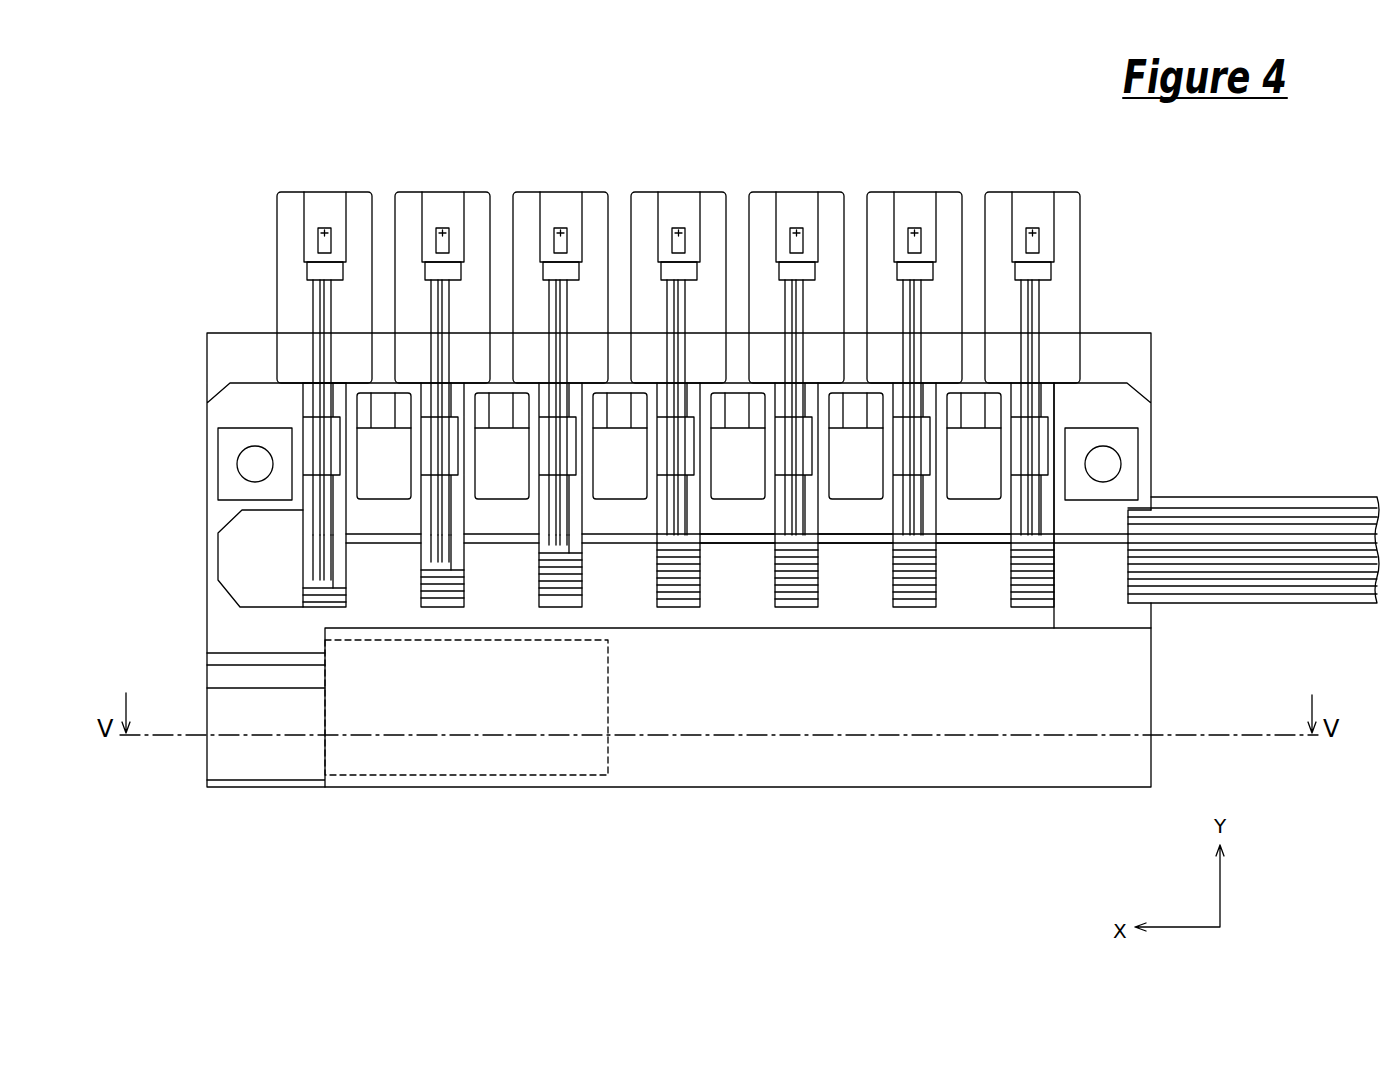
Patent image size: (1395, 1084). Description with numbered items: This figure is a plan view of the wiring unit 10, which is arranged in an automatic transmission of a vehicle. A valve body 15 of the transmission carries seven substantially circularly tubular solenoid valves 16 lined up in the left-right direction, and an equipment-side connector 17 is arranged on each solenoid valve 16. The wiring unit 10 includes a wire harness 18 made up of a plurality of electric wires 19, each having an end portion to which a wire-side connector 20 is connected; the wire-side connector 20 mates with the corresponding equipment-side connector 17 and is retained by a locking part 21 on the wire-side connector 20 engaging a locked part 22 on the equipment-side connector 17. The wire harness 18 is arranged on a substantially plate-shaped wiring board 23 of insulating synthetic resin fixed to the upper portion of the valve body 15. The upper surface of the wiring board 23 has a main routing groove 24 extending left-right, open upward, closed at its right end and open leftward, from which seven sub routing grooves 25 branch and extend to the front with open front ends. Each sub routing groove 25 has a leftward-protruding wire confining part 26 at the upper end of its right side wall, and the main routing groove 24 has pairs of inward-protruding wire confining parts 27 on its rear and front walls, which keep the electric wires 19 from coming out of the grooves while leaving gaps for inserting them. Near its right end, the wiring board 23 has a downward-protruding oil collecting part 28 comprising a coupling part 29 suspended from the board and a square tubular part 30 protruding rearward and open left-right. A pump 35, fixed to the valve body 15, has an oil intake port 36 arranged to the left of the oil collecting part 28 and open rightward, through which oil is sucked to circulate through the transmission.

The wiring unit 10 is at (1216, 443).
The valve body 15 is at (1115, 347).
The solenoid valve 16 is at (288, 200).
The equipment-side connector 17 is at (313, 198).
The wire harness 18 is at (1245, 497).
The electric wire 19 is at (330, 320).
The wire-side connector 20 is at (312, 272).
The locking part 21 is at (323, 230).
The locked part 22 is at (332, 238).
The wiring board 23 is at (1133, 410).
The main routing groove 24 is at (275, 600).
The sub routing groove 25 is at (313, 395).
The wire confining part 26 is at (320, 440).
The wire confining part 27 is at (732, 567).
The oil collecting part 28 is at (191, 649).
The coupling part 29 is at (230, 677).
The tubular part 30 is at (218, 723).
The pump 35 is at (1030, 765).
The oil intake port 36 is at (323, 752).